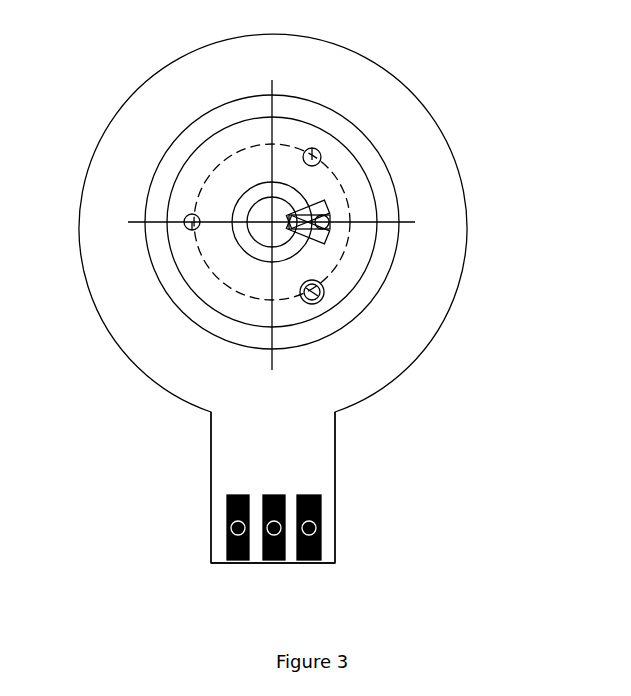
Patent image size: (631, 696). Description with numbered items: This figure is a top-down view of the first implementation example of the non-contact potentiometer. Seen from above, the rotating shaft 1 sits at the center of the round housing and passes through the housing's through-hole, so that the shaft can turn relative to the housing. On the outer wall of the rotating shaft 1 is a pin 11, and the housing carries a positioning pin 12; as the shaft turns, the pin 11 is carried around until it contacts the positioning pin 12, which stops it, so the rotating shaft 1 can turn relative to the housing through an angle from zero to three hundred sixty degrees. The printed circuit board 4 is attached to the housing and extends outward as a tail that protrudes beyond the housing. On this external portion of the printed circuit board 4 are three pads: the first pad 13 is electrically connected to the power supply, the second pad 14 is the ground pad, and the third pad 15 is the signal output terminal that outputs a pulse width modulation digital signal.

The rotating shaft 1 is at (235, 192).
The printed circuit board 4 is at (418, 362).
The pin 11 is at (417, 210).
The positioning pin 12 is at (338, 231).
The first pad 13 is at (228, 517).
The second pad 14 is at (228, 542).
The third pad 15 is at (335, 548).